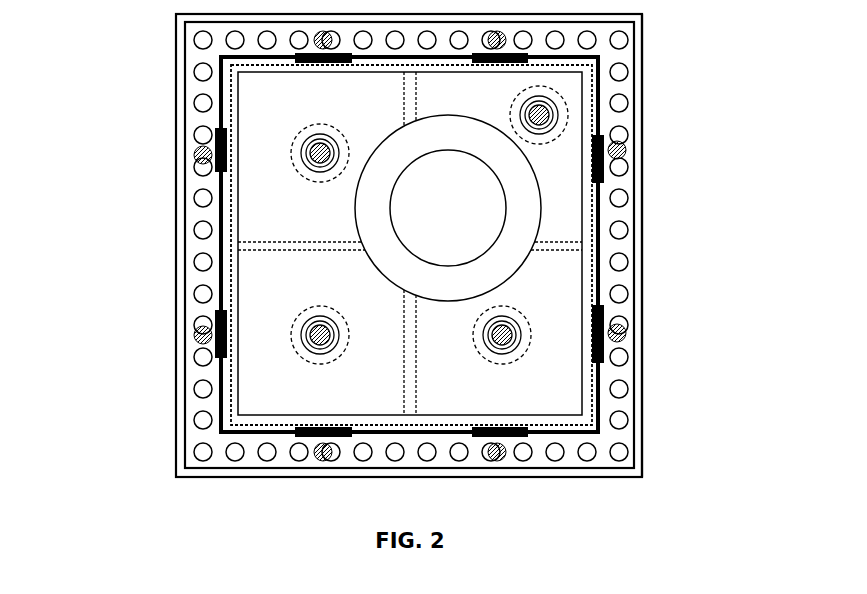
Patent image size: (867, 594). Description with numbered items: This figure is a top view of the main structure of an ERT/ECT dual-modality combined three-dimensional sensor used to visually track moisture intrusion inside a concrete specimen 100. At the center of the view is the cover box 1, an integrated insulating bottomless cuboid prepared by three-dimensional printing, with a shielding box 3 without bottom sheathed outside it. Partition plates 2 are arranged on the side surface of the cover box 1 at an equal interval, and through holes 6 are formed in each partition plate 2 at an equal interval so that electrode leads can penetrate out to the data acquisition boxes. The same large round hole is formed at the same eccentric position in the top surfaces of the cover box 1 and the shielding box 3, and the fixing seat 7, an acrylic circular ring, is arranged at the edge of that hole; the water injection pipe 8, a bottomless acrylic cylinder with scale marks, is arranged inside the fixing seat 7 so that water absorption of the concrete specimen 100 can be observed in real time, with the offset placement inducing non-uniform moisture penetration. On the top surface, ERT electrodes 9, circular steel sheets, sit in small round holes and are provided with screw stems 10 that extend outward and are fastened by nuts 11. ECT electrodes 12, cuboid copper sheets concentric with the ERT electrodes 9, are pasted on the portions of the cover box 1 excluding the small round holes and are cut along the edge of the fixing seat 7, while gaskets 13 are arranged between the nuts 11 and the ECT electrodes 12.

The cover box 1 is at (600, 243).
The partition plates 2 is at (195, 140).
The shielding box 3 is at (645, 323).
The through holes 6 is at (622, 38).
The fixing seat 7 is at (544, 208).
The water injection pipe 8 is at (500, 178).
The ERT electrodes 9 is at (298, 130).
The screw stems 10 is at (310, 337).
The nuts 11 is at (512, 338).
The ECT electrodes 12 is at (257, 188).
The gaskets 13 is at (300, 322).
The concrete specimen 100 is at (592, 87).